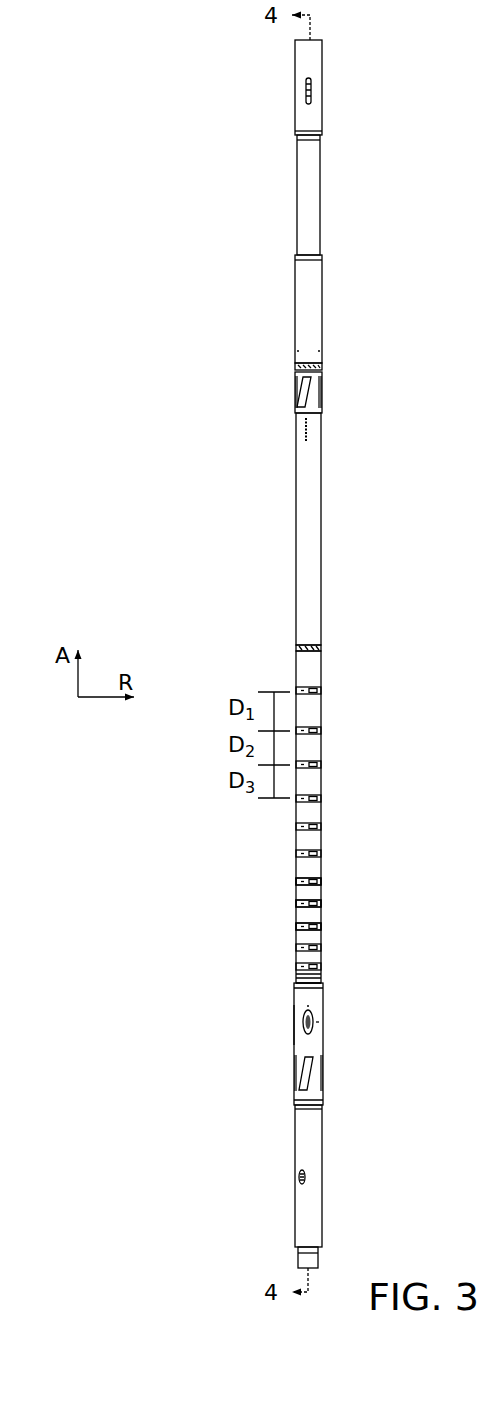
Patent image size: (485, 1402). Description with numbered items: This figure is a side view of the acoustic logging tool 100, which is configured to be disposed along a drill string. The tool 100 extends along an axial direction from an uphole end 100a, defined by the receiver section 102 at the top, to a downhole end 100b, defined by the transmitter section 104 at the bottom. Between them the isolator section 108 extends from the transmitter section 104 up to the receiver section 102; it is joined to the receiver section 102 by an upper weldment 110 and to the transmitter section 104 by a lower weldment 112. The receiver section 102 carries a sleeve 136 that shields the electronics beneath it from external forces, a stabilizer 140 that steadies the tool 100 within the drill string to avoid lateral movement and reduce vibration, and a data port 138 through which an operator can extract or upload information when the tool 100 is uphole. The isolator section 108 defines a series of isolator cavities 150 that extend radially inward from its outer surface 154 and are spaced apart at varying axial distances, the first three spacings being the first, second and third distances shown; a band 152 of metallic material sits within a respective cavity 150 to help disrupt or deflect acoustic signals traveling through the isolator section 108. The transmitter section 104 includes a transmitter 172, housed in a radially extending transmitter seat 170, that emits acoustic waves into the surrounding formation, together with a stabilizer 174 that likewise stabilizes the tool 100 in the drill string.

The acoustic logging tool 100 is at (327, 540).
The uphole end 100a is at (296, 230).
The downhole end 100b is at (290, 1153).
The receiver section 102 is at (295, 487).
The transmitter section 104 is at (325, 1038).
The isolator section 108 is at (328, 804).
The upper weldment 110 is at (327, 642).
The lower weldment 112 is at (326, 970).
The sleeve 136 is at (327, 327).
The data port 138 is at (308, 1183).
The stabilizer 140 is at (327, 387).
The isolator cavity 150 is at (292, 893).
The band 152 is at (326, 893).
The outer surface 154 is at (292, 936).
The transmitter seat 170 is at (300, 1017).
The transmitter 172 is at (292, 1024).
The stabilizer 174 is at (325, 1077).